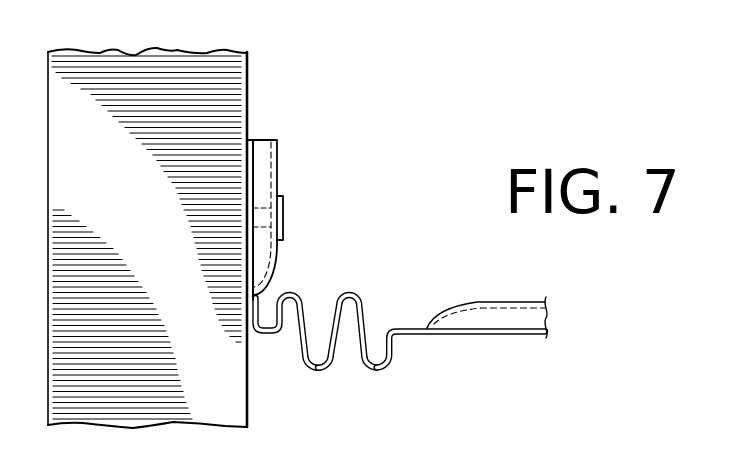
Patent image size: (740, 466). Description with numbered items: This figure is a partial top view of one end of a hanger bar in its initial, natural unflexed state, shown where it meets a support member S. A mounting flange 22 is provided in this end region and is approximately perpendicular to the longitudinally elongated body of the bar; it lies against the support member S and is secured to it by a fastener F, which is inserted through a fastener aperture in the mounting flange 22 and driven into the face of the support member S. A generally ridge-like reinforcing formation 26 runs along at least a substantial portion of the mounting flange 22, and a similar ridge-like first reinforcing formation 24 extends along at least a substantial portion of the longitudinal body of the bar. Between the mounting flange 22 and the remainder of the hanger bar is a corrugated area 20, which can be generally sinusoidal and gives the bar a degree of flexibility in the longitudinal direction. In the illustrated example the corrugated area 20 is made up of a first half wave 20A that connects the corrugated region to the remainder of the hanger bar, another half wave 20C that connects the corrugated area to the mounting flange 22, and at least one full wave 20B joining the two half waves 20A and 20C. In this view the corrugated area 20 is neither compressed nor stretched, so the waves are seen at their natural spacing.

The support member S is at (88, 50).
The mounting flange 22 is at (262, 165).
The reinforcing formation 26 is at (277, 162).
The fastener F is at (286, 211).
The corrugated area 20 is at (401, 329).
The first half wave 20A is at (390, 350).
The full wave 20B is at (336, 325).
The half wave 20C is at (280, 318).
The first reinforcing formation 24 is at (515, 312).